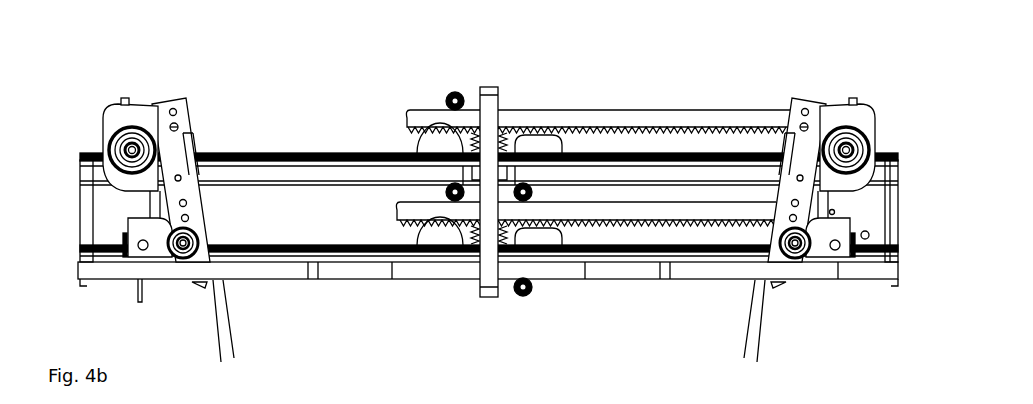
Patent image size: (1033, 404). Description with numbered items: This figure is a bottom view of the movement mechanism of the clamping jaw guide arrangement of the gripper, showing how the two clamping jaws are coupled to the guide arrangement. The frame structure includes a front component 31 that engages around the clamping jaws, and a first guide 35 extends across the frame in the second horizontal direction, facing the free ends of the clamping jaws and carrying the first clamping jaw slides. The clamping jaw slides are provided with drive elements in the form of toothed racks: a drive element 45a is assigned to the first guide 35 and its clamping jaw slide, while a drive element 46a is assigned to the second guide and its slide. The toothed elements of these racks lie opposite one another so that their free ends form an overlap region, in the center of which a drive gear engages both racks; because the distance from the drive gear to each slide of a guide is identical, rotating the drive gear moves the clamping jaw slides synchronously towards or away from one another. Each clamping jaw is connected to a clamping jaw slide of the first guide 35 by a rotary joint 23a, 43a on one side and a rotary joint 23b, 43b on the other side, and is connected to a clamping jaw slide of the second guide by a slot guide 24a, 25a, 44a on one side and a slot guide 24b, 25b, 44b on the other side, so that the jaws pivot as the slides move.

The slot guide 44b is at (122, 128).
The slot guide 24b is at (148, 113).
The slot guide 25b is at (118, 190).
The rotary joint 23b is at (120, 250).
The rotary joint 43b is at (182, 256).
The first guide 35 is at (278, 258).
The front component 31 is at (342, 270).
The drive element 45a is at (608, 213).
The drive element 46a is at (660, 118).
The rotary joint 43a is at (798, 258).
The rotary joint 23a is at (860, 256).
The slot guide 24a is at (835, 120).
The slot guide 44a is at (857, 130).
The slot guide 25a is at (847, 182).